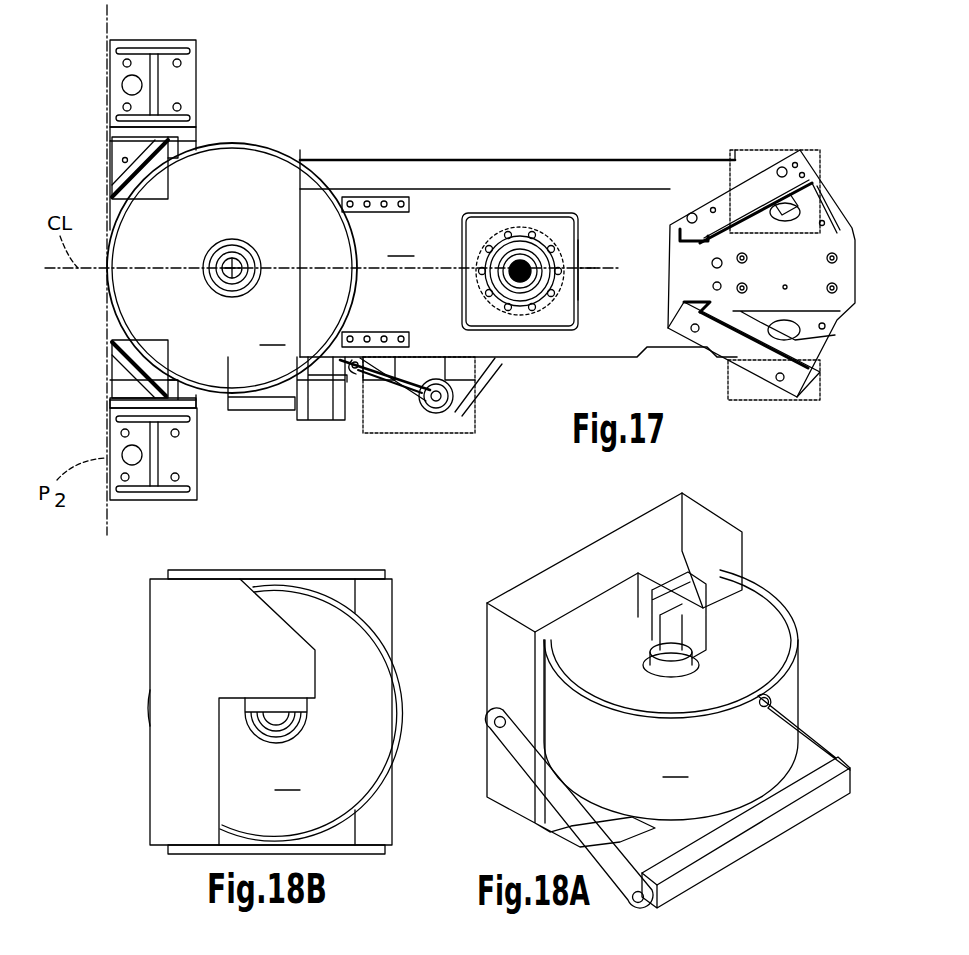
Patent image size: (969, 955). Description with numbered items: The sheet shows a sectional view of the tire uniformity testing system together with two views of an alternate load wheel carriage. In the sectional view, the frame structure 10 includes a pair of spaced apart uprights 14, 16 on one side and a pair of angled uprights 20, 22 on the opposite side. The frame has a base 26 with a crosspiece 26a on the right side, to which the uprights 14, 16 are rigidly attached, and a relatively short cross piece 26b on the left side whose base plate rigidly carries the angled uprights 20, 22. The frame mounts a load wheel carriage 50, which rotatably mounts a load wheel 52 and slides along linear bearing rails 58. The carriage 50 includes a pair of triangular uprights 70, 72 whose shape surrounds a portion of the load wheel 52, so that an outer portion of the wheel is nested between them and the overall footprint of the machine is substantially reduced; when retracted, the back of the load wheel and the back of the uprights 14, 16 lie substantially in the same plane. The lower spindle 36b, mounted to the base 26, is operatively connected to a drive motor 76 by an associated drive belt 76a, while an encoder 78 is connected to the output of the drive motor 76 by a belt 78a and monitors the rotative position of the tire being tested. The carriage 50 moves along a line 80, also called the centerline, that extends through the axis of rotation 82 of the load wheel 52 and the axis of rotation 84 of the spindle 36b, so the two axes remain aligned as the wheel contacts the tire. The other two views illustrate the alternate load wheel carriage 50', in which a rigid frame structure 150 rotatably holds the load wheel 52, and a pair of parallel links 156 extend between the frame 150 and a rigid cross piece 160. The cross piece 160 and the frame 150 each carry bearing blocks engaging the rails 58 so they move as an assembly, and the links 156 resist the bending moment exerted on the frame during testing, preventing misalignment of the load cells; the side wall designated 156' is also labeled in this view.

In FIG. 17, the frame structure 10 is at (548, 158).
In FIG. 17, the upright 14 is at (178, 46).
In FIG. 17, the upright 16 is at (173, 497).
In FIG. 17, the angled upright 20 is at (820, 186).
In FIG. 17, the angled upright 22 is at (820, 357).
In FIG. 17, the base 26 is at (482, 285).
In FIG. 17, the crosspiece 26a is at (205, 138).
In FIG. 17, the cross piece 26b is at (753, 148).
In FIG. 17, the lower spindle 36b is at (588, 264).
In FIG. 17, the load wheel carriage 50 is at (232, 268).
In FIG. 18B, the alternate load wheel carriage 50' is at (137, 754).
In FIG. 18A, the alternate load wheel carriage 50' is at (650, 729).
In FIG. 18B, the load wheel 52 is at (311, 713).
In FIG. 18A, the load wheel 52 is at (671, 695).
In FIG. 17, the linear bearing rails 58 is at (371, 198).
In FIG. 17, the upright 70 is at (110, 148).
In FIG. 17, the upright 72 is at (128, 394).
In FIG. 17, the drive motor 76 is at (463, 418).
In FIG. 17, the drive belt 76a is at (486, 360).
In FIG. 17, the encoder 78 is at (357, 364).
In FIG. 17, the belt 78a is at (397, 388).
In FIG. 17, the line 80 is at (598, 278).
In FIG. 17, the axis of rotation 82 is at (240, 266).
In FIG. 17, the axis of rotation 84 is at (518, 258).
In FIG. 18B, the rigid frame structure 150 is at (185, 803).
In FIG. 18A, the parallel links 156 is at (683, 810).
In FIG. 18A, the side wall 156' is at (585, 670).
In FIG. 18A, the rigid cross piece 160 is at (770, 800).